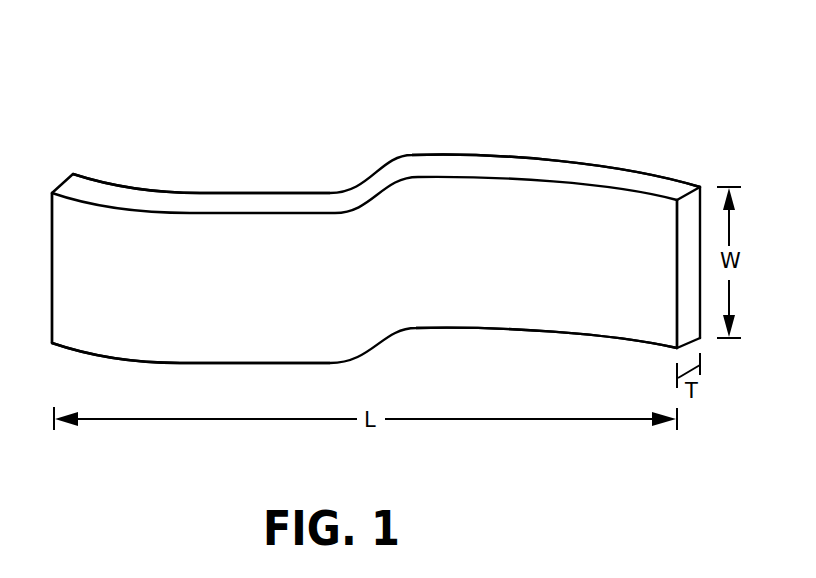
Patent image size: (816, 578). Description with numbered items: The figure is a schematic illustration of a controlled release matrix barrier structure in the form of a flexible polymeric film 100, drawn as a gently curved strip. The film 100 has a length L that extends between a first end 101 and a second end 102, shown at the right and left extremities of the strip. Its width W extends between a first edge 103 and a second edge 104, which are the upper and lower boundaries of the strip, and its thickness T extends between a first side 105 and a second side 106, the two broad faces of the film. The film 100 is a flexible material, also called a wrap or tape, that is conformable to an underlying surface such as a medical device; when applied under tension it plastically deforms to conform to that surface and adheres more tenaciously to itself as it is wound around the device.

The flexible polymeric film 100 is at (436, 95).
The first end 101 is at (677, 293).
The second end 102 is at (52, 306).
The first edge 103 is at (613, 172).
The second edge 104 is at (480, 328).
The first side 105 is at (220, 335).
The second side 106 is at (275, 193).